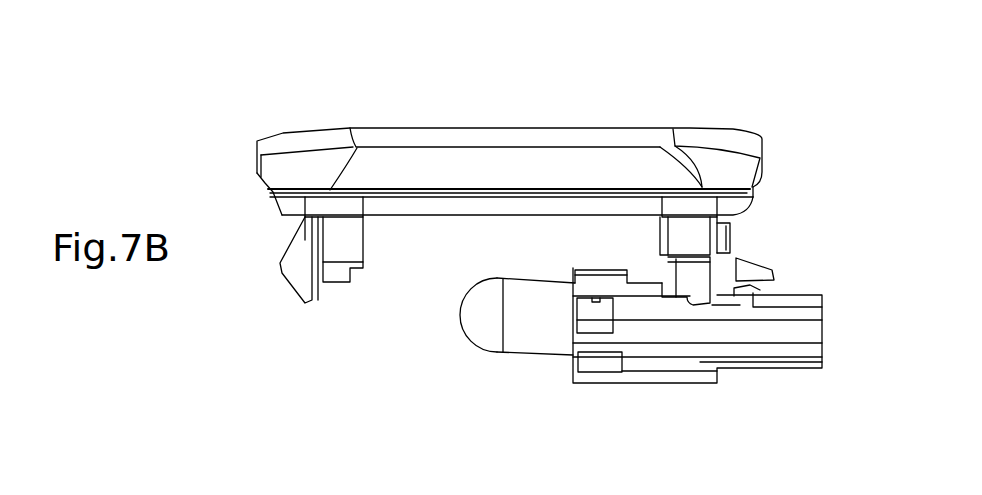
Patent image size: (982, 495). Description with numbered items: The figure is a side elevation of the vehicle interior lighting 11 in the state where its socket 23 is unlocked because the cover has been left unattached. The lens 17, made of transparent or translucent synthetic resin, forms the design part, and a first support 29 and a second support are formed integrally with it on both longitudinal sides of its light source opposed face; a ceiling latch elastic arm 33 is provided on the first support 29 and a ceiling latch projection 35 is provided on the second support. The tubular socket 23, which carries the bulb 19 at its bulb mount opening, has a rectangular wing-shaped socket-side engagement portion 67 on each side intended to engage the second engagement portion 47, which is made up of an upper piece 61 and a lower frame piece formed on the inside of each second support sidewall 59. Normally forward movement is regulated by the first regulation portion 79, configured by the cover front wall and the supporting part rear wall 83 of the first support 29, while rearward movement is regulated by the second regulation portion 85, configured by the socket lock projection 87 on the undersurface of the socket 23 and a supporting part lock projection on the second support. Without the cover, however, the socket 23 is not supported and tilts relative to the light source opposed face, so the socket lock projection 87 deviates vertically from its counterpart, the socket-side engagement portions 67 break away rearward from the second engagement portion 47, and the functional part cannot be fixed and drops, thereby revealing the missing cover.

The vehicle interior lighting 11 is at (559, 243).
The lens 17 is at (509, 171).
The bulb 19 is at (533, 352).
The socket 23 is at (708, 355).
The first support 29 is at (342, 211).
The ceiling latch elastic arm 33 is at (281, 273).
The ceiling latch projection 35 is at (760, 262).
The second engagement portion 47 is at (728, 280).
The second support sidewall 59 is at (697, 230).
The upper piece 61 is at (693, 305).
The socket-side engagement portion 67 is at (741, 300).
The first regulation portion 79 is at (365, 249).
The supporting part rear wall 83 is at (365, 237).
The second regulation portion 85 is at (764, 299).
The socket lock projection 87 is at (760, 289).